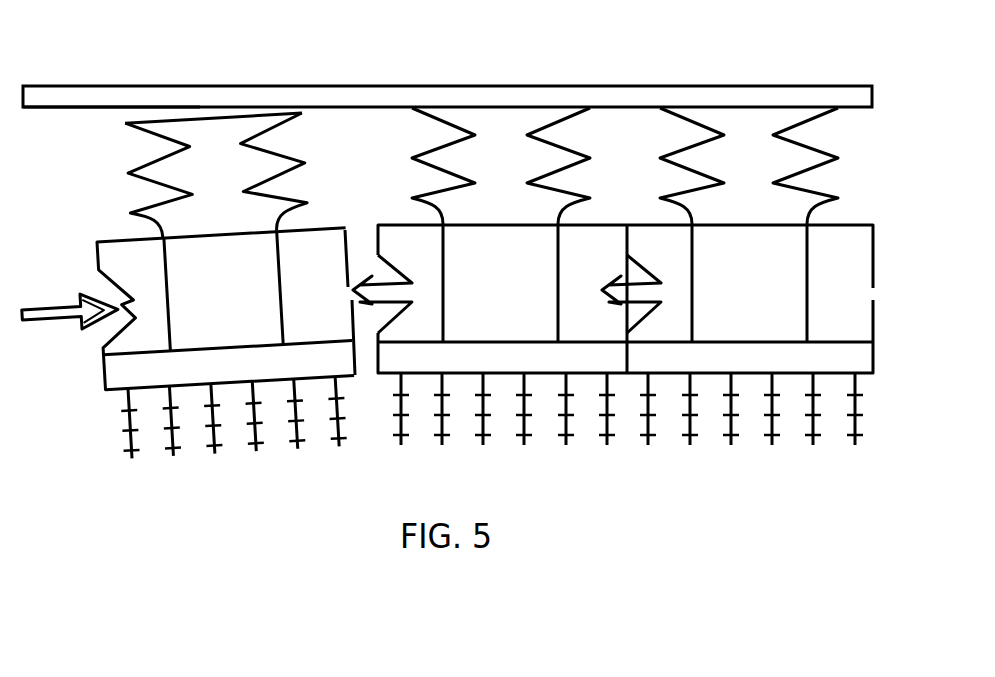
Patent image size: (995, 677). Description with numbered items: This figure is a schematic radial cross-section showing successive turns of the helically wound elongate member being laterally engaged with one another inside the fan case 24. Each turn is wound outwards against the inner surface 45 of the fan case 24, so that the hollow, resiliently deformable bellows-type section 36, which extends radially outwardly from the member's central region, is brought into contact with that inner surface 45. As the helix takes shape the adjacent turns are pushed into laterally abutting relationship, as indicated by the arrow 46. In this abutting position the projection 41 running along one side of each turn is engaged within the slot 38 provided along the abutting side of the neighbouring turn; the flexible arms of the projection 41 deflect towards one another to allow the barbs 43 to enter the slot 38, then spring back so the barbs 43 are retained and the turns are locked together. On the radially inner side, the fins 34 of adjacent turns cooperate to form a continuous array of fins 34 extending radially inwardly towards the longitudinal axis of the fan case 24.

The fan case 24 is at (212, 86).
The inner surface 45 is at (73, 108).
The bellows-type section 36 is at (273, 158).
The opening 38 is at (349, 291).
The projection 41 is at (370, 303).
The barb 43 is at (606, 299).
The arrow 46 is at (48, 322).
The fins 34 is at (567, 445).